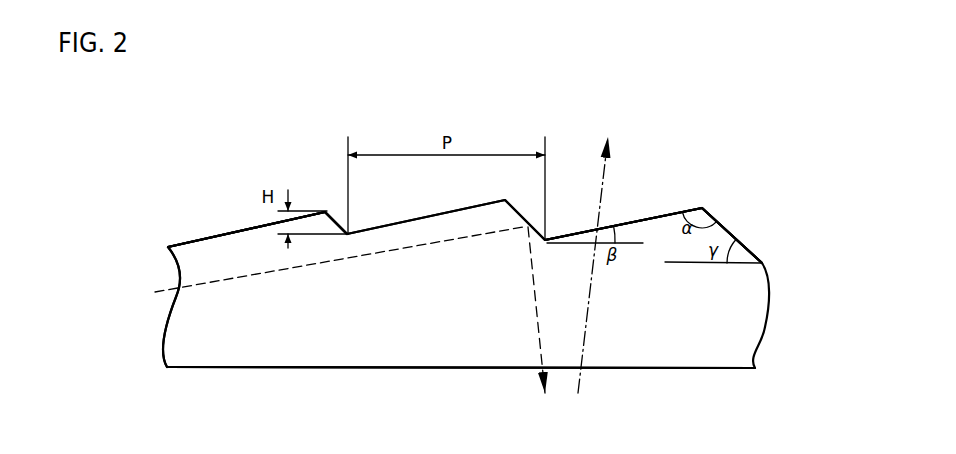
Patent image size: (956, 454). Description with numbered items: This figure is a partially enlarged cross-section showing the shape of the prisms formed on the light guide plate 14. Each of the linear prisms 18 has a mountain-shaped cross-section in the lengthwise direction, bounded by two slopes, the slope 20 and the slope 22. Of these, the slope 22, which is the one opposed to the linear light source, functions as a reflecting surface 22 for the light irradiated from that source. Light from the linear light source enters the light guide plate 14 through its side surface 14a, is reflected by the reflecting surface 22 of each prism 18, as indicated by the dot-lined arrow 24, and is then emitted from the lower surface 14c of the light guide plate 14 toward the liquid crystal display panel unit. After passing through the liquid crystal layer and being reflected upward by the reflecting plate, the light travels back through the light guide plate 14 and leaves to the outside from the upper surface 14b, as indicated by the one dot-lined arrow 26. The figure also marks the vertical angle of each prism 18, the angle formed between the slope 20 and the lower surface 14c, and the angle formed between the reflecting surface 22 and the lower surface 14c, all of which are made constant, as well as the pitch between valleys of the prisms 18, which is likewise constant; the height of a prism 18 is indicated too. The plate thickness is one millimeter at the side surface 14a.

The light guide plate 14 is at (455, 106).
The side surface 14a is at (102, 305).
The upper surface 14b is at (650, 203).
The lower surface 14c is at (480, 370).
The linear prism 18 is at (247, 223).
The slope 20 is at (218, 230).
The reflecting surface 22 is at (338, 217).
The dot-lined arrow 24 is at (535, 292).
The one dot-lined arrow 26 is at (592, 293).